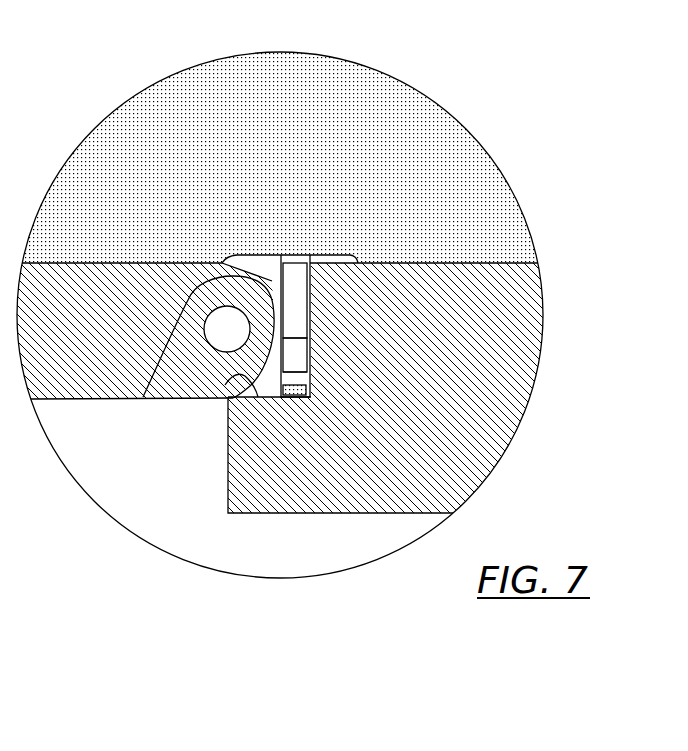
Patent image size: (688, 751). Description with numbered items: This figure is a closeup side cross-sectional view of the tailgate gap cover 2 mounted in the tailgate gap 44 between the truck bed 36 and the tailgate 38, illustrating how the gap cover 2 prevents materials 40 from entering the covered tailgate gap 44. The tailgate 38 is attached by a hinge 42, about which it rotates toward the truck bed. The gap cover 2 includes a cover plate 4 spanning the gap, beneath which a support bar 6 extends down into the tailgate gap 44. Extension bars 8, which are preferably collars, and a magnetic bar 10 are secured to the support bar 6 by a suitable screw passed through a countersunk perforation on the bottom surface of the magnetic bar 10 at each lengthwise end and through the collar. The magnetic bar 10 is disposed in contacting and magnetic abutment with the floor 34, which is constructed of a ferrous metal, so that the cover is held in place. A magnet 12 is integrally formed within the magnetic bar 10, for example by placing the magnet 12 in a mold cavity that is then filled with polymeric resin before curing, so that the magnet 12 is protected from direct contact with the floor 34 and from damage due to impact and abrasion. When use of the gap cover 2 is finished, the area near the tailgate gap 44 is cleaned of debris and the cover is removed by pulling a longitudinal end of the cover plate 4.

The gap cover 2 is at (300, 218).
The cover plate 4 is at (333, 255).
The support bar 6 is at (287, 309).
The extension bars 8 is at (287, 369).
The magnetic bar 10 is at (310, 374).
The magnet 12 is at (310, 390).
The floor 34 is at (225, 385).
The truck bed 36 is at (421, 263).
The tailgate 38 is at (82, 399).
The materials 40 is at (254, 70).
The hinge 42 is at (205, 338).
The tailgate gap 44 is at (143, 397).